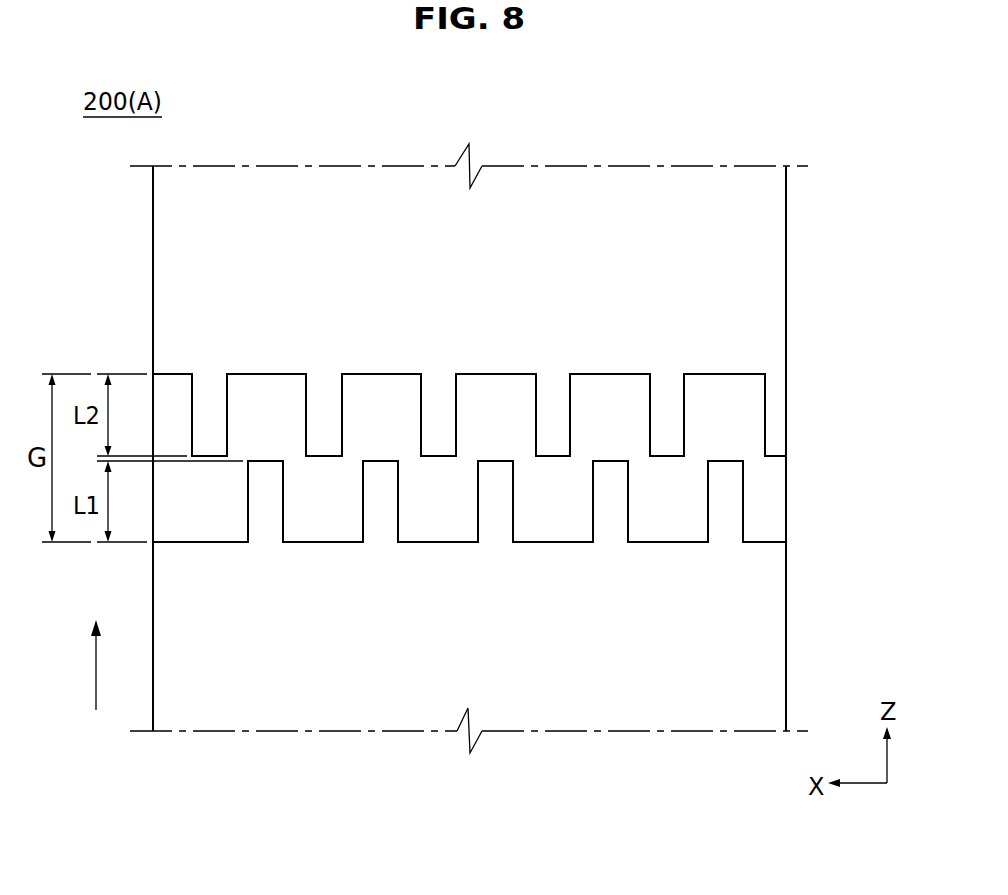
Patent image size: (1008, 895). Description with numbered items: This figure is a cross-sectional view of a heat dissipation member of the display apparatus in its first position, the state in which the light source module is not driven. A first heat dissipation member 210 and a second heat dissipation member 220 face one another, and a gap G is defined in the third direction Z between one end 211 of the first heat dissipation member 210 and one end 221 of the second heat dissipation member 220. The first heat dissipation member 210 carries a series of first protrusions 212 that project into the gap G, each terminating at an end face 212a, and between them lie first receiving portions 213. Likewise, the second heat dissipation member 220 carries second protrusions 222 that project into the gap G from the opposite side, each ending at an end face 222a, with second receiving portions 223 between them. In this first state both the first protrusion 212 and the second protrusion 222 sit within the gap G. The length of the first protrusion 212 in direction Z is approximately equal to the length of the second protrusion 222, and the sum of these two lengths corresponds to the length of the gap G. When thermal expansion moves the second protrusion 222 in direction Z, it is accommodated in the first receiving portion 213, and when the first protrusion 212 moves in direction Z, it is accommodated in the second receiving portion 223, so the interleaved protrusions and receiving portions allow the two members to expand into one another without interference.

The second heat dissipation member 220 is at (799, 245).
The one end of the second heat dissipation member 221 is at (168, 374).
The second protrusion 222 is at (437, 427).
The end surface of second protrusion 222a is at (437, 460).
The second receiving portion 223 is at (393, 389).
The first heat dissipation member 210 is at (799, 638).
The one end of the first heat dissipation member 211 is at (205, 545).
The first protrusion 212 is at (383, 490).
The end surface of first protrusion 212a is at (493, 460).
The first receiving portion 213 is at (332, 507).